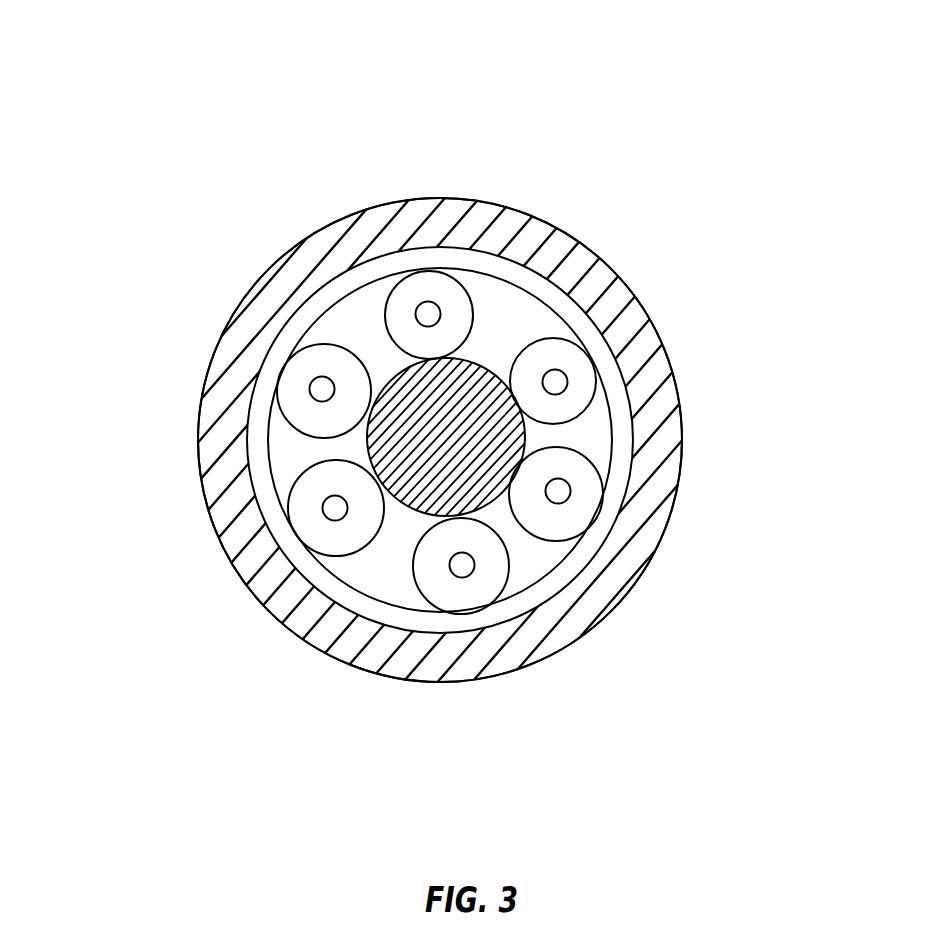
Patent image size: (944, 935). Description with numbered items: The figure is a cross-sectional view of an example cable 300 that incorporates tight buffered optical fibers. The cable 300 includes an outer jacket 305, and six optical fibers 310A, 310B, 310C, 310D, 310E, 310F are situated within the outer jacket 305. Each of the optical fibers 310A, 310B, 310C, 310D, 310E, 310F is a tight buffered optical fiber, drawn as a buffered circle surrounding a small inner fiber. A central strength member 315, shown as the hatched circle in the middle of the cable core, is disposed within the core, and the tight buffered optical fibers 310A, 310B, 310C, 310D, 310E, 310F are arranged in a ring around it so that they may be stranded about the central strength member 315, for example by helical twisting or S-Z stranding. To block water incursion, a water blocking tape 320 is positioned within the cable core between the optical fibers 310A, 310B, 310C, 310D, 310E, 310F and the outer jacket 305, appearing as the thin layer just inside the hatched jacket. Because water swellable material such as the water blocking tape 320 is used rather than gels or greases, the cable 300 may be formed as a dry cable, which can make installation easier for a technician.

The cable 300 is at (100, 78).
The outer jacket 305 is at (609, 260).
The water blocking tape 320 is at (504, 274).
The central strength member 315 is at (364, 448).
The optical fiber 310A is at (553, 337).
The optical fiber 310B is at (600, 474).
The optical fiber 310C is at (503, 593).
The optical fiber 310D is at (345, 565).
The optical fiber 310E is at (282, 418).
The optical fiber 310F is at (378, 306).